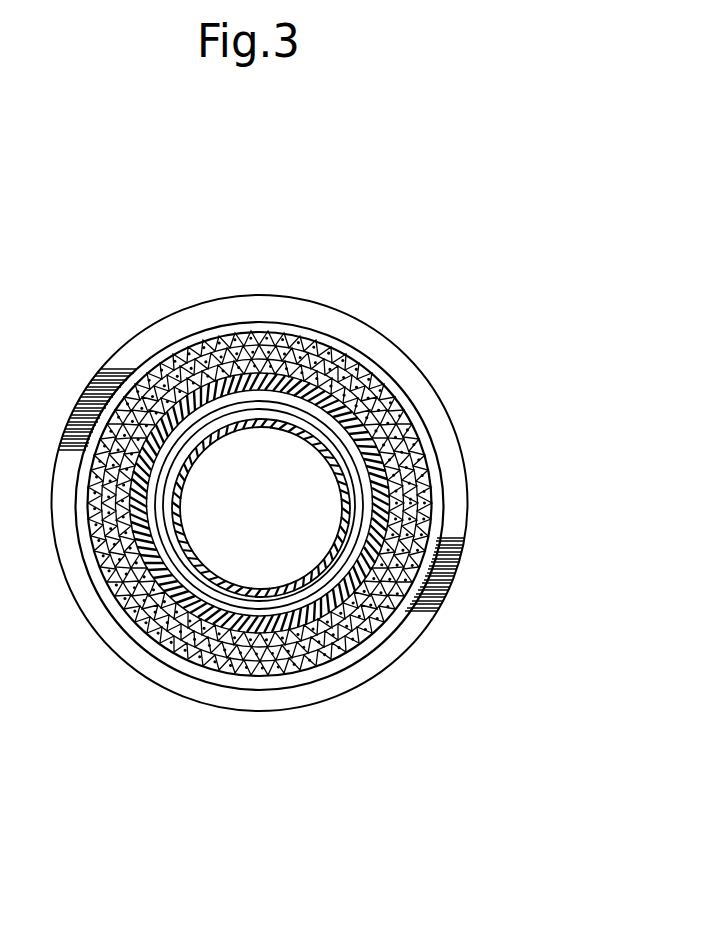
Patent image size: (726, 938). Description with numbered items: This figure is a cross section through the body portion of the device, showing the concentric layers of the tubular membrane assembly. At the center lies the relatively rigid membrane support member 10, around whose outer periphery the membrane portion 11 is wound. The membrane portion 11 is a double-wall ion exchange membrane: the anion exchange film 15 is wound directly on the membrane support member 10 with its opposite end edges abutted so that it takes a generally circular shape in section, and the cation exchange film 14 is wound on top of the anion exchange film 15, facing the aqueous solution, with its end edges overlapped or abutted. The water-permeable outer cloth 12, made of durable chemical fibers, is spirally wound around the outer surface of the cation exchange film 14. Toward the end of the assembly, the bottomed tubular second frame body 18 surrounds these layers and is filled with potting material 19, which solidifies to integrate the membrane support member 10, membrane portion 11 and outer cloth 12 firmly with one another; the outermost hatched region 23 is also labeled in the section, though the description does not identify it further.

The membrane support member 10 is at (215, 662).
The membrane portion 11 is at (158, 632).
The outer cloth 12 is at (385, 390).
The cation exchange film 14 is at (330, 650).
The anion exchange film 15 is at (298, 663).
The second frame body 18 is at (452, 437).
The potting material 19 is at (435, 510).
The hatched filler 23 is at (437, 613).